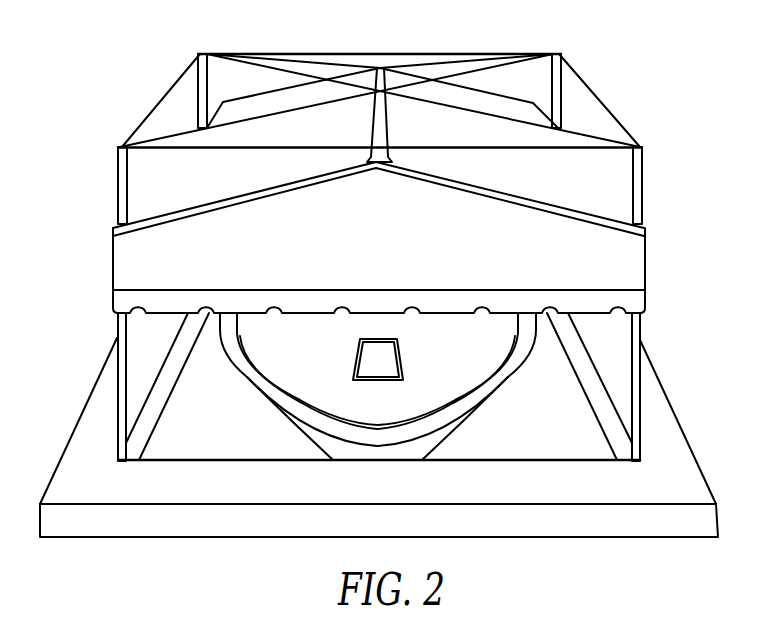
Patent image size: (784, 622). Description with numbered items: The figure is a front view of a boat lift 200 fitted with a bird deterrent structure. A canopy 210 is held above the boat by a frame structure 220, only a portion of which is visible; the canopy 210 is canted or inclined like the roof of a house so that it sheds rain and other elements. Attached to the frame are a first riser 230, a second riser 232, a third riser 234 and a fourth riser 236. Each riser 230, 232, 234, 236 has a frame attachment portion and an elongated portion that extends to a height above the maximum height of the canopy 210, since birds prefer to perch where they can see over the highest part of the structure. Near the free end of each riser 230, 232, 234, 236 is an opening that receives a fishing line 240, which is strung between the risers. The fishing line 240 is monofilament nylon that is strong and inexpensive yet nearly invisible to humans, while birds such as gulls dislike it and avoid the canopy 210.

The boat lift 200 is at (672, 452).
The canopy 210 is at (622, 252).
The frame structure 220 is at (122, 370).
The first riser 230 is at (200, 52).
The second riser 232 is at (559, 52).
The third riser 234 is at (121, 146).
The fourth riser 236 is at (640, 146).
The fishing line 240 is at (595, 90).